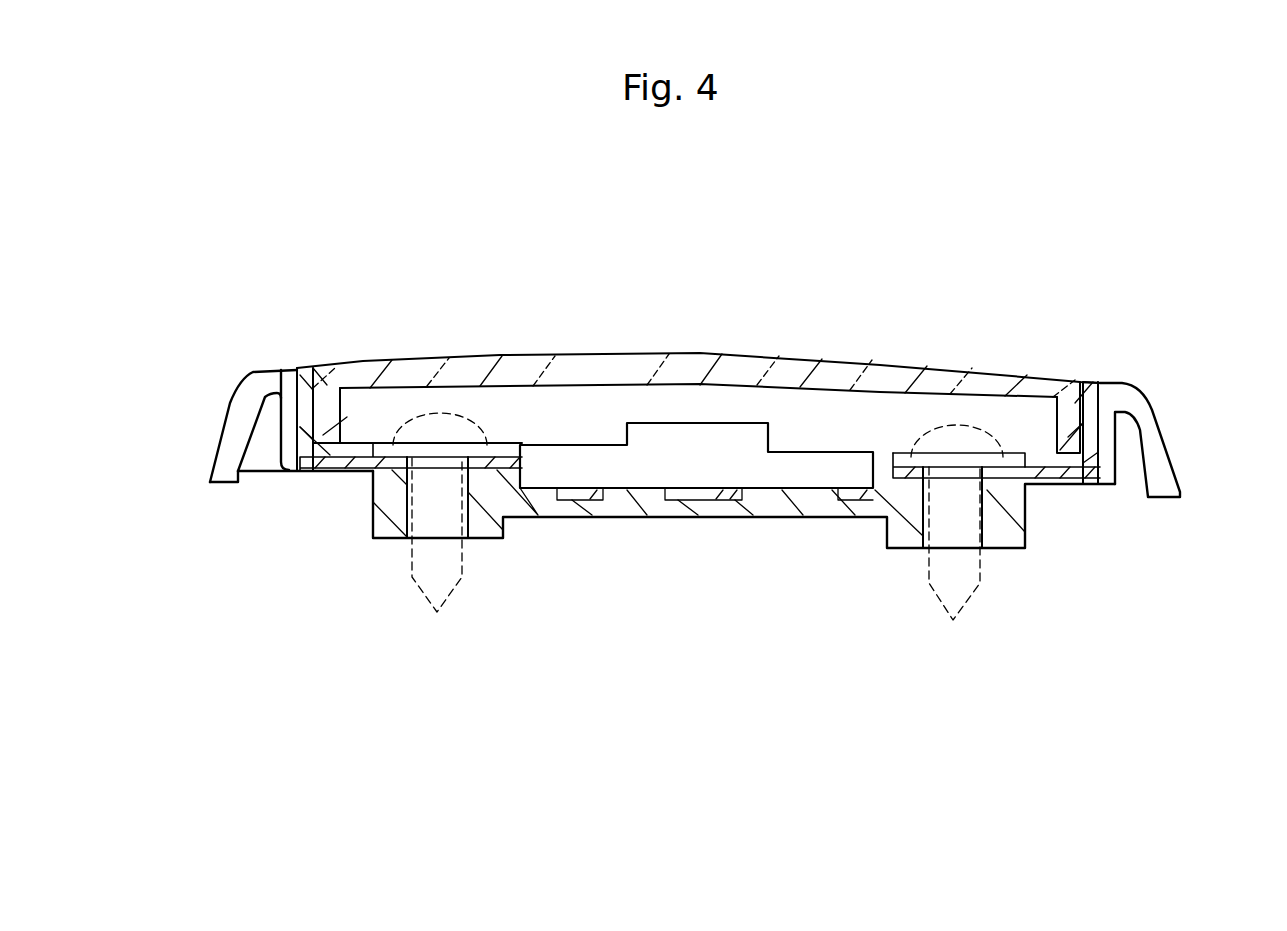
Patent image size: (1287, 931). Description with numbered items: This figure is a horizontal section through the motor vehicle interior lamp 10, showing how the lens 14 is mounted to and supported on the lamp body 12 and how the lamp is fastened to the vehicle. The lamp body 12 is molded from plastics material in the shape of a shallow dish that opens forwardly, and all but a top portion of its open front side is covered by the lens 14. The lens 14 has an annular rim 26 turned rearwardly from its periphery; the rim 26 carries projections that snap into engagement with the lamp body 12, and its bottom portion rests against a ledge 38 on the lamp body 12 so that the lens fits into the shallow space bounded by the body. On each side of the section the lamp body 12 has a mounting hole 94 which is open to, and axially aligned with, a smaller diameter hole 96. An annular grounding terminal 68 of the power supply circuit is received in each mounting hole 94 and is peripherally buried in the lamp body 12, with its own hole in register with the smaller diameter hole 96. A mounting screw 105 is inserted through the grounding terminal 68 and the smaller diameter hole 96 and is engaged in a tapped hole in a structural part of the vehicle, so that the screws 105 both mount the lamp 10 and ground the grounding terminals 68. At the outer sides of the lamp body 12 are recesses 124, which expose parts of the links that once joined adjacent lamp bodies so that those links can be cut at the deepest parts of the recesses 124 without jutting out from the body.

The motor vehicle interior lamp 10 is at (790, 334).
The lamp body 12 is at (1180, 450).
The lens 14 is at (596, 366).
The annular rim 26 is at (340, 422).
The ledge 38 is at (692, 462).
The annular grounding terminal 68 is at (487, 450).
The mounting hole 94 is at (898, 437).
The smaller diameter hole 96 is at (412, 493).
The mounting screw 105 is at (438, 415).
The recess 124 is at (290, 387).